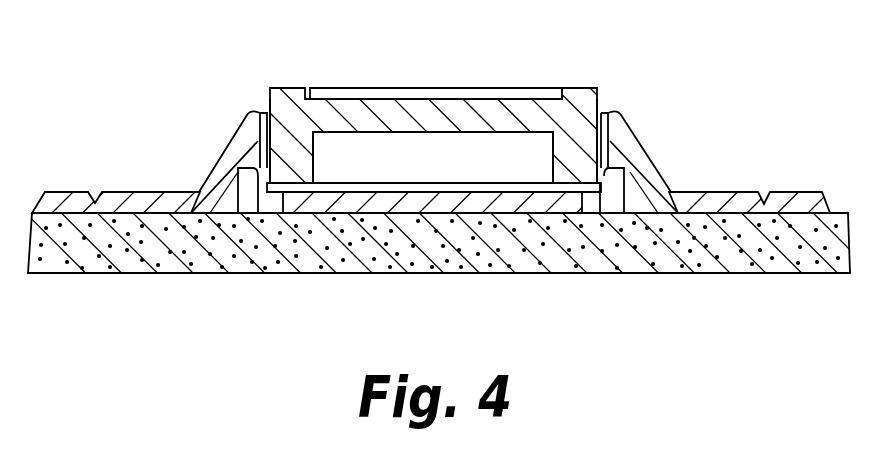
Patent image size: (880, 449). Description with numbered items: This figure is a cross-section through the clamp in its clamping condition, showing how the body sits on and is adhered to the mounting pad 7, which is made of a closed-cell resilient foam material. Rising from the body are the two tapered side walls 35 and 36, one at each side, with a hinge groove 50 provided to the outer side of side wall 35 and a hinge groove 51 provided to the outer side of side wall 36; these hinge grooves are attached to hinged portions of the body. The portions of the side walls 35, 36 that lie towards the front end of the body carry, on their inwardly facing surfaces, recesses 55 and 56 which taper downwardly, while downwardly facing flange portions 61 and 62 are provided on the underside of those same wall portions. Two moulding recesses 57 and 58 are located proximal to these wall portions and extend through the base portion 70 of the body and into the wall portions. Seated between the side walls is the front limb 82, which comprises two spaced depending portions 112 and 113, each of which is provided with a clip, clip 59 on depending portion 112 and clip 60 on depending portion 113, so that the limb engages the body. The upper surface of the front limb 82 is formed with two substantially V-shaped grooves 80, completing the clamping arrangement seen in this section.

The mounting pad 7 is at (167, 227).
The hinge groove 50 is at (95, 200).
The hinge groove 51 is at (766, 197).
The base portion 70 is at (422, 202).
The front limb 82 is at (297, 117).
The V-shaped grooves 80 is at (438, 97).
The depending portion 112 is at (292, 117).
The depending portion 113 is at (571, 162).
The tapered side wall 35 is at (234, 145).
The tapered side wall 36 is at (623, 146).
The recess 55 is at (261, 110).
The recess 56 is at (608, 113).
The moulding recess 57 is at (233, 203).
The moulding recess 58 is at (596, 203).
The clip 59 is at (257, 198).
The clip 60 is at (607, 187).
The downwardly facing flange portion 61 is at (232, 143).
The downwardly facing flange portion 62 is at (627, 187).